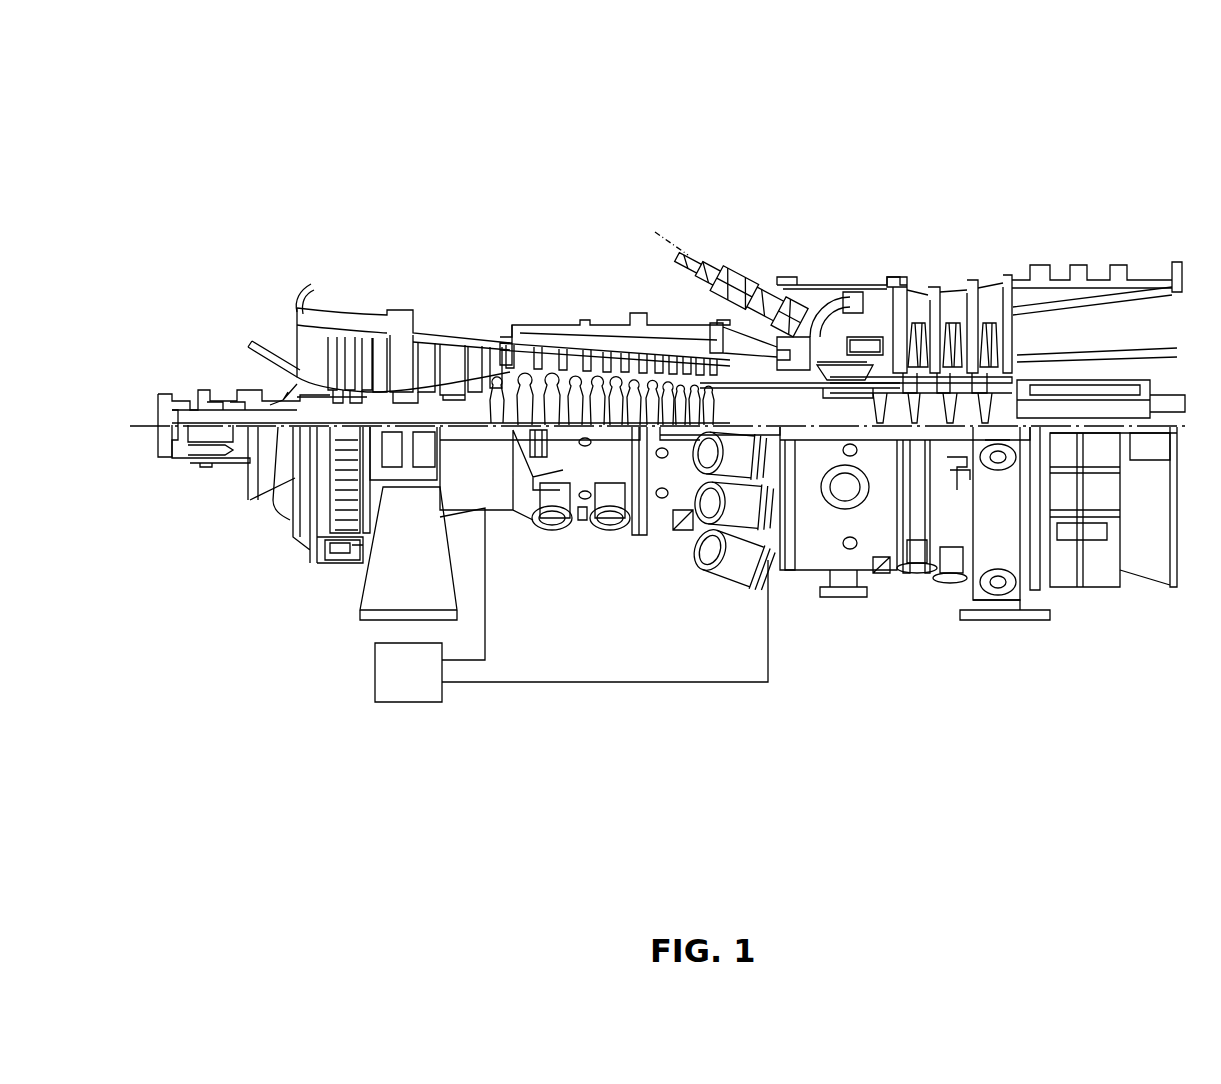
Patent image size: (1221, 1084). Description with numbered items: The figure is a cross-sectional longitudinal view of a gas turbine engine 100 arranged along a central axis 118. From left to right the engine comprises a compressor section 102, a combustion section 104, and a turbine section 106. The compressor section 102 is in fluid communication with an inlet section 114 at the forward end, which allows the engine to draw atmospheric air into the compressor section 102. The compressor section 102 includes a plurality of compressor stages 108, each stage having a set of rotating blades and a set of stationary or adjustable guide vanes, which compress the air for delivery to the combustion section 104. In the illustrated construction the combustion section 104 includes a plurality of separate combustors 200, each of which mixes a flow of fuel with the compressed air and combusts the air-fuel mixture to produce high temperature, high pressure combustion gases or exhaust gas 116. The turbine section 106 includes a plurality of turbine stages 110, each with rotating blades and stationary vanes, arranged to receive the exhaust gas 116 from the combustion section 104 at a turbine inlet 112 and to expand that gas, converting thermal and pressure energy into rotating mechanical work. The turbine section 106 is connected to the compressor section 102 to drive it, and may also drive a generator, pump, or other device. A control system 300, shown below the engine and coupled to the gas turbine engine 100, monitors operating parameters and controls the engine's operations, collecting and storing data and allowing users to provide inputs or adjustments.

The gas turbine engine 100 is at (912, 106).
The compressor section 102 is at (453, 332).
The combustion section 104 is at (812, 305).
The turbine section 106 is at (1003, 280).
The compressor stages 108 is at (407, 363).
The turbine stages 110 is at (970, 337).
The turbine inlet 112 is at (884, 337).
The inlet section 114 is at (287, 337).
The exhaust gas 116 is at (838, 322).
The central axis 118 is at (277, 510).
The combustors 200 is at (707, 512).
The control system 300 is at (424, 686).